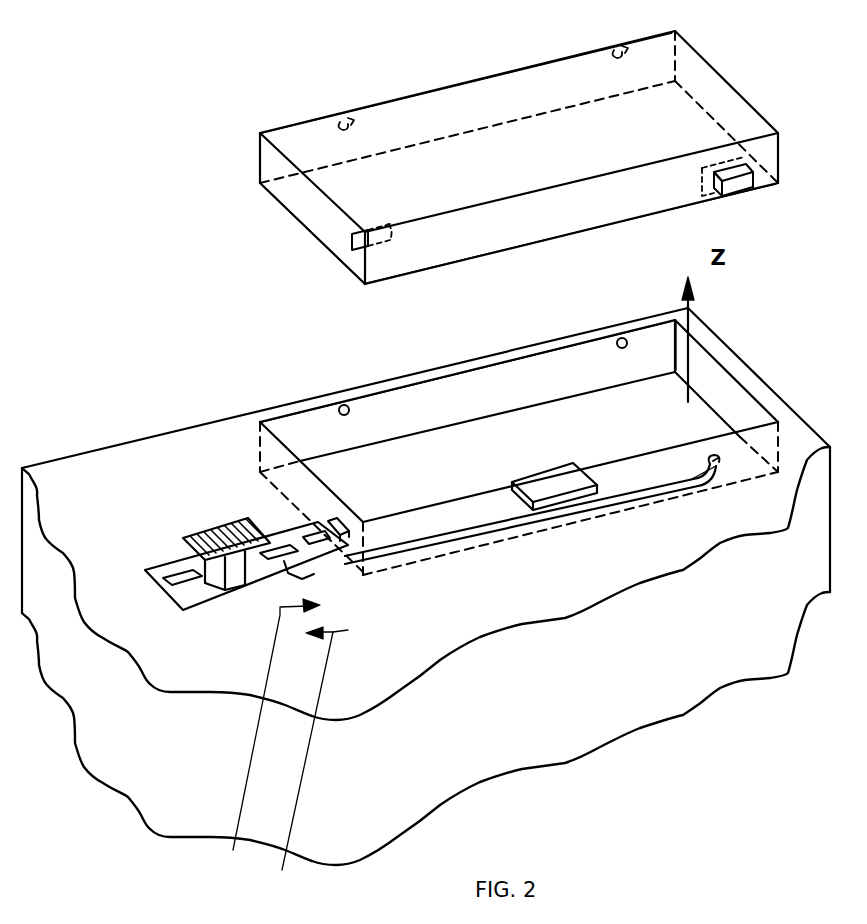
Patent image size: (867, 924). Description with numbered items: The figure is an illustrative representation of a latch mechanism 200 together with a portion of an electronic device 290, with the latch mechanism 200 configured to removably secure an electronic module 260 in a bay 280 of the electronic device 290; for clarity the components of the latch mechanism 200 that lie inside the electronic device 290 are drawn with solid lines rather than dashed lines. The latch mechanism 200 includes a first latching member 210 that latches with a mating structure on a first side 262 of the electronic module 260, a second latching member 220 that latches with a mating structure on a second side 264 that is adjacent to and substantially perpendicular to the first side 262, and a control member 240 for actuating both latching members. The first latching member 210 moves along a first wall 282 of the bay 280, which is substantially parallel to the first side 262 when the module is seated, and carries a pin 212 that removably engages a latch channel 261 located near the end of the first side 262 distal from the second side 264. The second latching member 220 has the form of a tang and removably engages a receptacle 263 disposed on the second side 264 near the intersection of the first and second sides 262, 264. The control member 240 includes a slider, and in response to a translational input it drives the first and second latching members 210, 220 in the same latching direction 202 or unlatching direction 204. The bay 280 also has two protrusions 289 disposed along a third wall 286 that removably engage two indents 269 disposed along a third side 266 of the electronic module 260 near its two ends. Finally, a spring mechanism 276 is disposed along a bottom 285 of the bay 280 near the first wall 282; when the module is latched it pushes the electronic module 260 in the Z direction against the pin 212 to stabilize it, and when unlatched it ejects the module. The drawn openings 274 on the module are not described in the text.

The latch mechanism 200 is at (168, 540).
The latching direction 202 is at (261, 740).
The unlatching direction 204 is at (302, 763).
The first latching member 210 is at (497, 525).
The pin 212 is at (716, 462).
The second latching member 220 is at (318, 538).
The control member 240 is at (215, 532).
The electronic module 260 is at (270, 220).
The latch channel 261 is at (740, 180).
The first side 262 is at (522, 228).
The receptacle 263 is at (362, 248).
The second side 264 is at (318, 213).
The third side 266 is at (312, 135).
The indents 269 is at (350, 122).
The apertures 274 is at (275, 556).
The spring mechanism 276 is at (560, 483).
The bay 280 is at (708, 418).
The first wall 282 is at (690, 478).
The bottom 285 is at (647, 402).
The third wall 286 is at (638, 345).
The protrusions 289 is at (348, 406).
The electronic device 290 is at (692, 645).